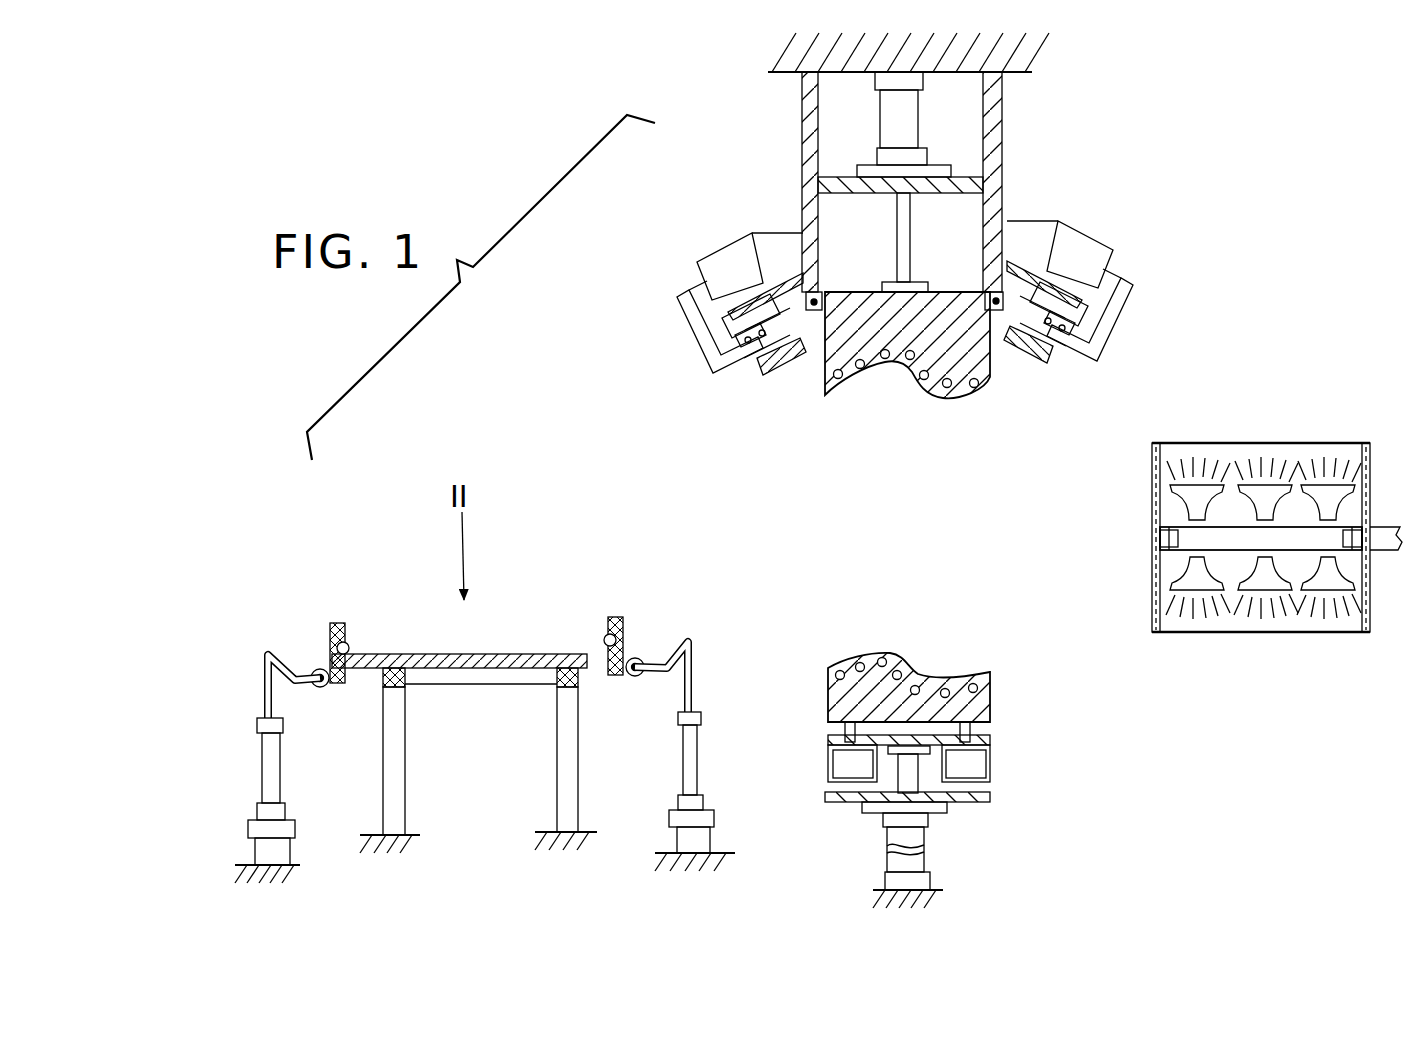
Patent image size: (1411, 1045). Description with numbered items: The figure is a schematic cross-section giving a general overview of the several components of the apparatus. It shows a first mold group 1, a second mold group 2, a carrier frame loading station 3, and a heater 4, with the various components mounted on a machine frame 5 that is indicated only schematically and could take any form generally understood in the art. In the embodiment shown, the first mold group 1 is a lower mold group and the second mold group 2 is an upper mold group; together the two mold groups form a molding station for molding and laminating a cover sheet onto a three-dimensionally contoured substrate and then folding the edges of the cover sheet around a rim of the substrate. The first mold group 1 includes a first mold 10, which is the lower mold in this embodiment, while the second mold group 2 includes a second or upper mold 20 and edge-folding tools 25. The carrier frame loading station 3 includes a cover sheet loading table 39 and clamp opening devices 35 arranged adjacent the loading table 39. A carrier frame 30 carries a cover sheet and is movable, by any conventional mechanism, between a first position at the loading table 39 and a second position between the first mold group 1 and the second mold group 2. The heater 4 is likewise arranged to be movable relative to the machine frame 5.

The first mold group 1 is at (832, 638).
The second mold group 2 is at (832, 423).
The carrier frame loading station 3 is at (657, 612).
The heater 4 is at (1140, 525).
The machine frame 5 is at (1017, 72).
The first mold 10 is at (990, 698).
The second mold 20 is at (995, 378).
The edge-folding tools 25 is at (1055, 362).
The carrier frame 30 is at (600, 652).
The clamp opening devices 35 is at (703, 685).
The cover sheet loading table 39 is at (414, 654).